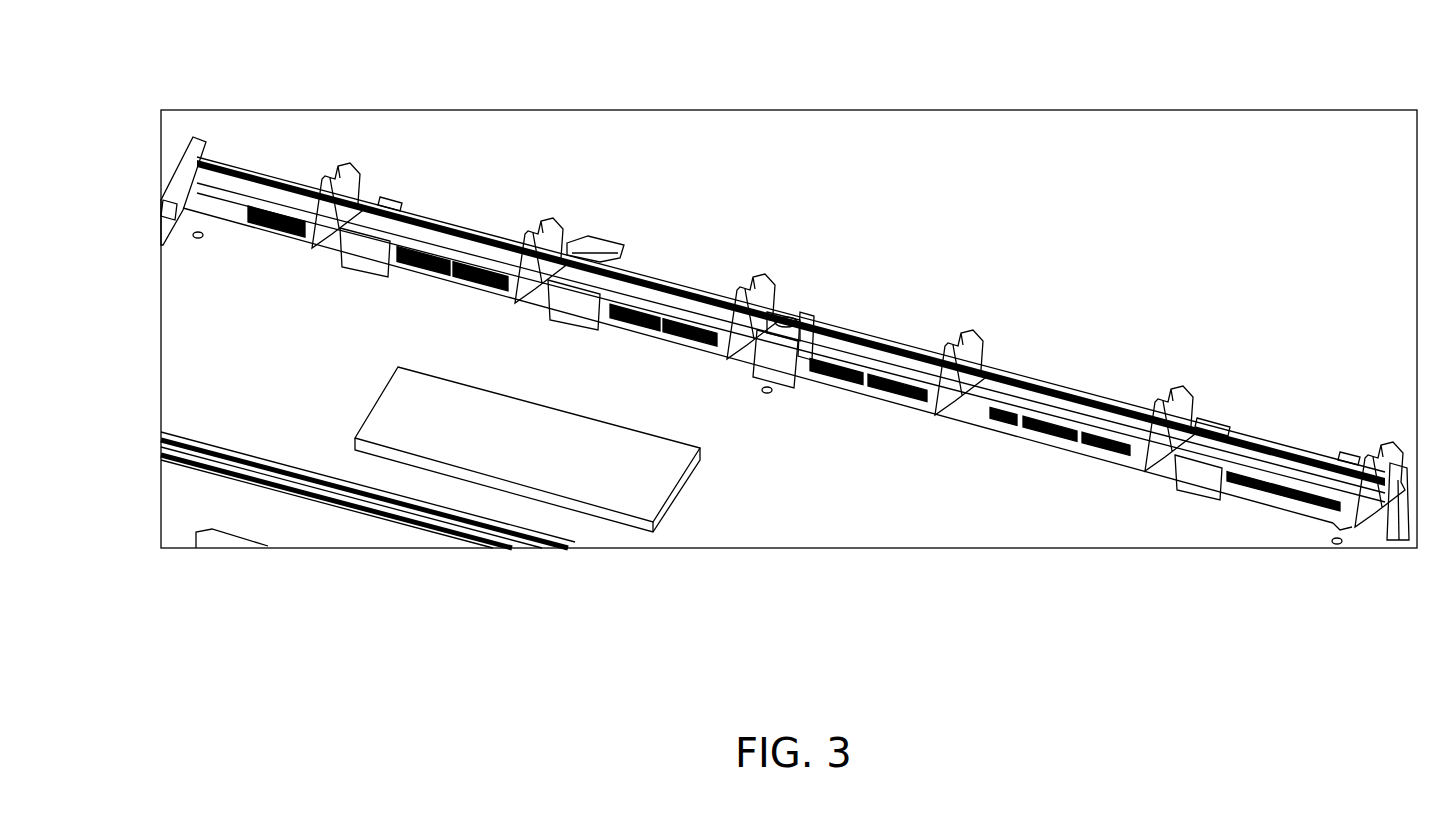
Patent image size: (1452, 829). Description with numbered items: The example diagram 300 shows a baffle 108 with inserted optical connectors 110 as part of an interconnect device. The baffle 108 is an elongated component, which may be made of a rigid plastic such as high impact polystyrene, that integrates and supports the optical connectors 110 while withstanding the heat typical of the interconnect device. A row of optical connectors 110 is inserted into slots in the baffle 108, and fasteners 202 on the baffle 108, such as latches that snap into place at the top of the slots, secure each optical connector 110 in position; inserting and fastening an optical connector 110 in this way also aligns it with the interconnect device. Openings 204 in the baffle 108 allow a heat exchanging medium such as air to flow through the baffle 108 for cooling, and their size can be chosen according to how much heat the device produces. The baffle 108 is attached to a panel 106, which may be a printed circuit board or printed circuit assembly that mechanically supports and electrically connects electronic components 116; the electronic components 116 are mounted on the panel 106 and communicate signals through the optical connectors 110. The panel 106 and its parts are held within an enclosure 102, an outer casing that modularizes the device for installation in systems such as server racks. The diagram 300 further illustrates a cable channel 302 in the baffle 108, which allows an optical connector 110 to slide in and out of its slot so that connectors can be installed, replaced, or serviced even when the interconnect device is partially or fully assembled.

The enclosure 102 is at (312, 497).
The panel 106 is at (233, 268).
The baffle 108 is at (1260, 455).
The optical connector 110 is at (351, 165).
The electronic components 116 is at (372, 415).
The fasteners 202 is at (980, 366).
The openings 204 is at (422, 262).
The example diagram 300 is at (813, 723).
The cable channel 302 is at (337, 213).